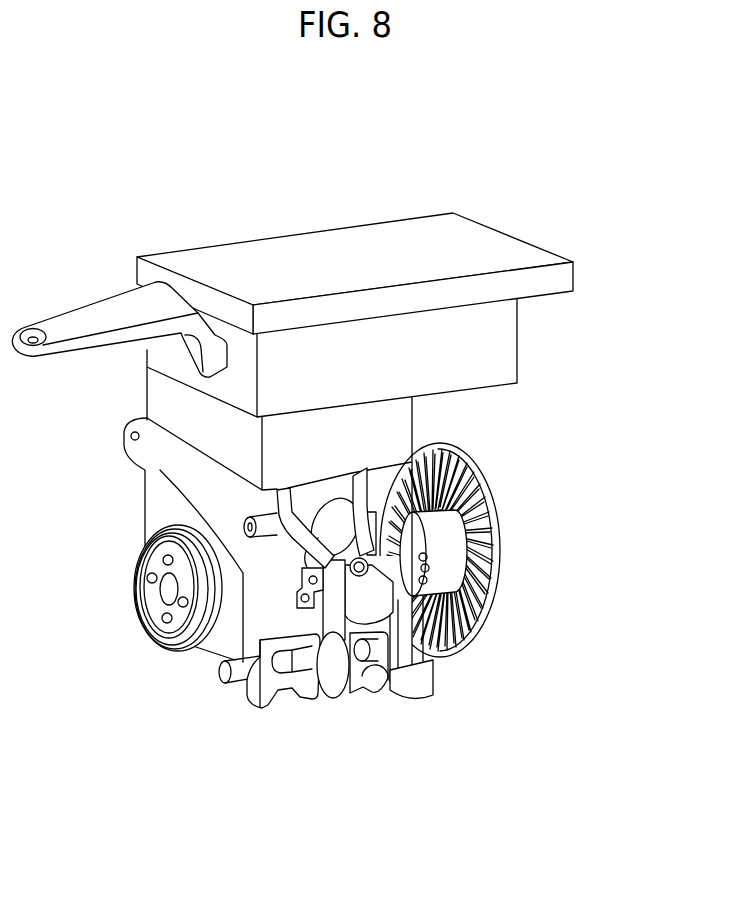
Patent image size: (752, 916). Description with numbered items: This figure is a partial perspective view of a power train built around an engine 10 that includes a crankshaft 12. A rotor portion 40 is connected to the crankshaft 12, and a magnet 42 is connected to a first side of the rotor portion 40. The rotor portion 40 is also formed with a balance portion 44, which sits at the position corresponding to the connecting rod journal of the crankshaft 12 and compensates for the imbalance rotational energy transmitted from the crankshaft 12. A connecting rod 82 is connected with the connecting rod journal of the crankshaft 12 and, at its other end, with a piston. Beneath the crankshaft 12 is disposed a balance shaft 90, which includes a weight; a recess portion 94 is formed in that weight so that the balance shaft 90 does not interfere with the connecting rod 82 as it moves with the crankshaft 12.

The engine 10 is at (548, 335).
The crankshaft 12 is at (440, 652).
The rotor portion 40 is at (500, 546).
The magnet 42 is at (490, 630).
The balance portion 44 is at (440, 468).
The connecting rod 82 is at (283, 494).
The balance shaft 90 is at (341, 697).
The recess portion 94 is at (280, 710).